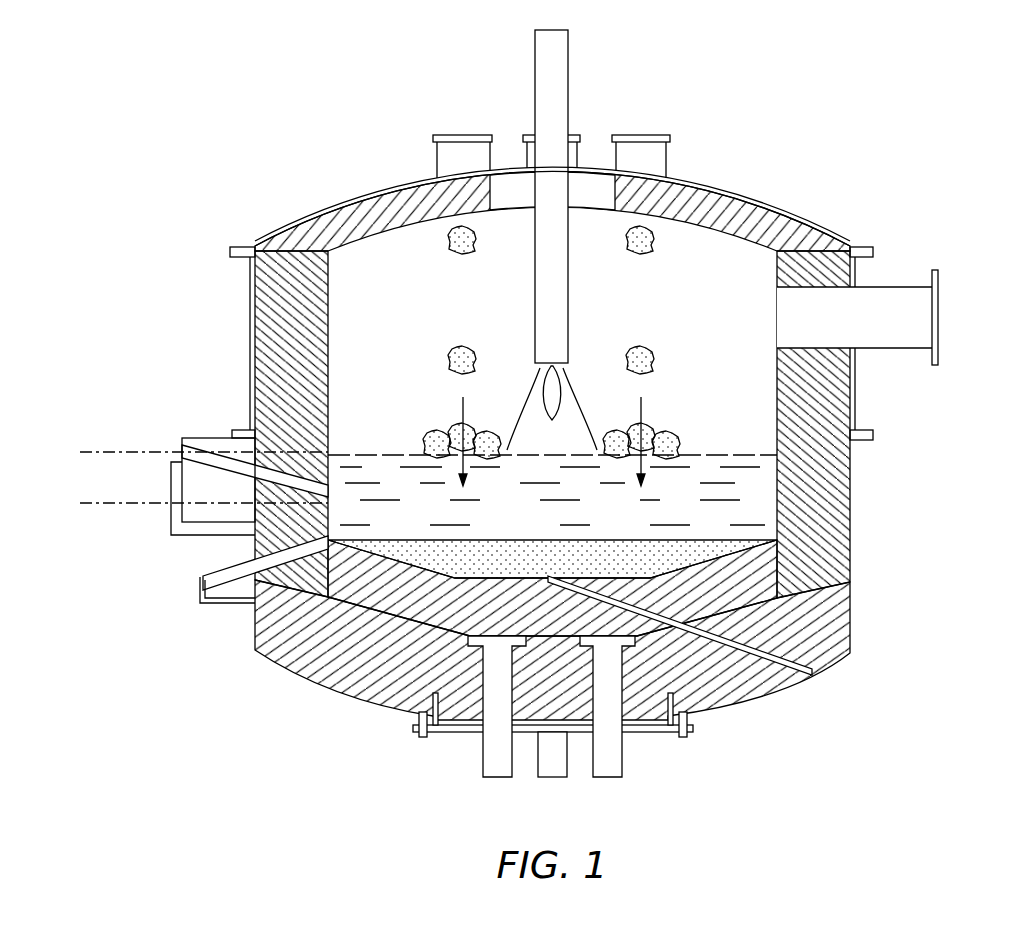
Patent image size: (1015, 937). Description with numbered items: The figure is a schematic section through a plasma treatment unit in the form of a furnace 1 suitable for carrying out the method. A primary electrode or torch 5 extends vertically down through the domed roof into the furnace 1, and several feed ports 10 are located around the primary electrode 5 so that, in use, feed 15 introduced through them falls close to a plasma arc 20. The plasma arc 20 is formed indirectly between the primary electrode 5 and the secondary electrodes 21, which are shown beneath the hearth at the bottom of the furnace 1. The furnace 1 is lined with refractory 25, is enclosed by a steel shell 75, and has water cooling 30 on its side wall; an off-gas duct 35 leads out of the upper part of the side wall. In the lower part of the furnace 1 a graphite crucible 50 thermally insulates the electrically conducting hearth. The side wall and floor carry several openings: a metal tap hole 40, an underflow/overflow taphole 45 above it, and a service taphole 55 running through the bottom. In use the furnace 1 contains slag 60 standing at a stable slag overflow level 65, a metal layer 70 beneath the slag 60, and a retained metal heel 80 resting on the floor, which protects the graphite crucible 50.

The furnace 1 is at (251, 103).
The primary electrode 5 is at (570, 42).
The feed ports 10 is at (433, 150).
The feed 15 is at (440, 347).
The plasma arc 20 is at (582, 373).
The secondary electrodes 21 is at (497, 780).
The refractory 25 is at (800, 234).
The water cooling 30 is at (250, 285).
The off-gas duct 35 is at (938, 279).
The metal tap hole 40 is at (252, 560).
The underflow/overflow taphole 45 is at (182, 442).
The graphite crucible 50 is at (355, 598).
The service taphole 55 is at (812, 672).
The slag 60 is at (372, 466).
The slag overflow level 65 is at (90, 450).
The metal layer 70 is at (90, 506).
The steel shell 75 is at (856, 462).
The retained metal heel 80 is at (503, 548).